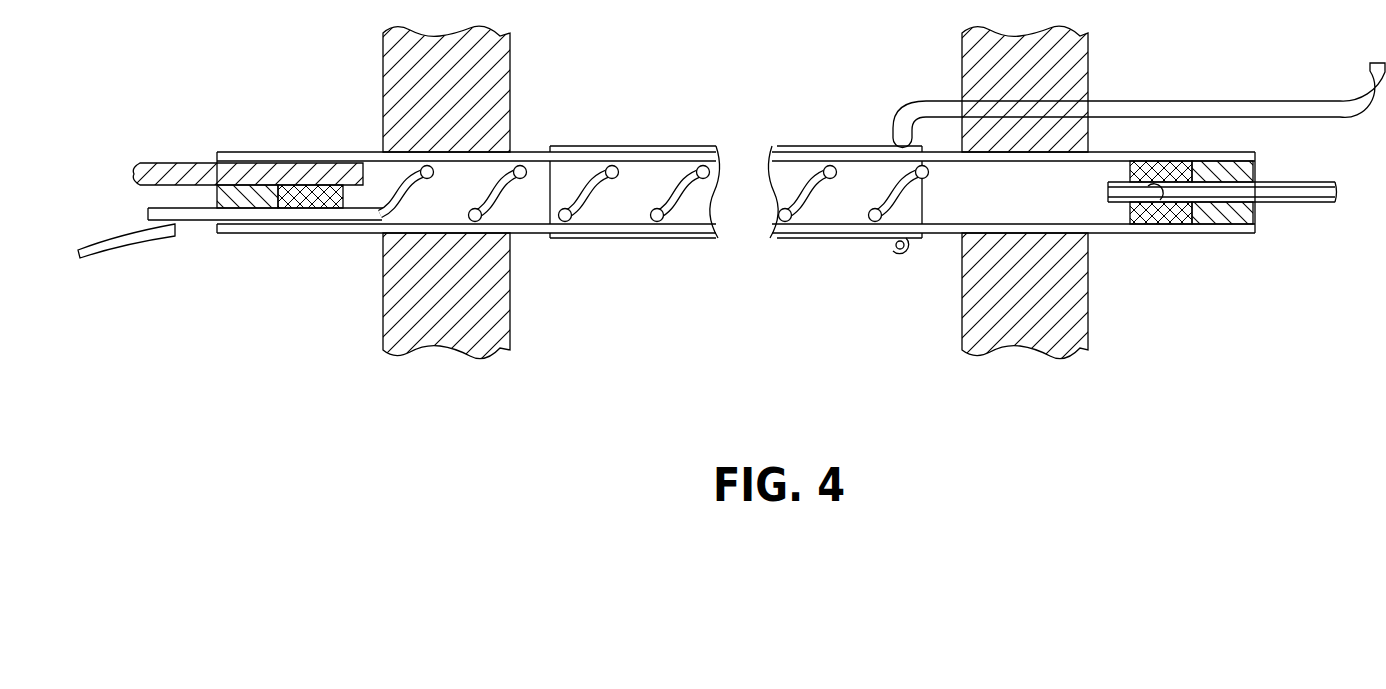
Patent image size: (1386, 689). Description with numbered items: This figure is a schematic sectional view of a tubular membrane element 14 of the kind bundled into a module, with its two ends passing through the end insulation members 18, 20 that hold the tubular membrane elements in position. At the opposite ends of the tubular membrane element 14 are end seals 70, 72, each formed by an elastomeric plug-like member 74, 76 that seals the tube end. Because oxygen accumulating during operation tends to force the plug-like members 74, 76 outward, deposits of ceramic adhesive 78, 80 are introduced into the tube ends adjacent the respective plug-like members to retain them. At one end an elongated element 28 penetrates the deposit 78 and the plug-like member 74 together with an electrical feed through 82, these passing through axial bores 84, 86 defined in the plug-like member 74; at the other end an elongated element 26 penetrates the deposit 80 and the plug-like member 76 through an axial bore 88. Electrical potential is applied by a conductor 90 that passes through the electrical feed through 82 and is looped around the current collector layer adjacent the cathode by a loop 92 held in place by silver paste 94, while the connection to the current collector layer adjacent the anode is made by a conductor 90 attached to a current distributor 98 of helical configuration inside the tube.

The tubular membrane element 14 is at (760, 72).
The end insulation member 18 is at (398, 333).
The end insulation member 20 is at (1080, 332).
The elongated element 26 is at (1307, 205).
The elongated element 28 is at (177, 168).
The end seal 70 is at (193, 195).
The end seal 72 is at (1270, 157).
The plug-like member 74 is at (308, 198).
The plug-like member 76 is at (1170, 177).
The ceramic adhesive deposit 78 is at (250, 192).
The ceramic adhesive deposit 80 is at (1228, 213).
The electrical feed through 82 is at (207, 224).
The axial bore 84 is at (335, 218).
The axial bore 86 is at (330, 172).
The axial bore 88 is at (1160, 200).
The conductor 90 is at (112, 250).
The loop 92 is at (897, 258).
The silver paste 94 is at (895, 140).
The current distributor 98 is at (373, 218).